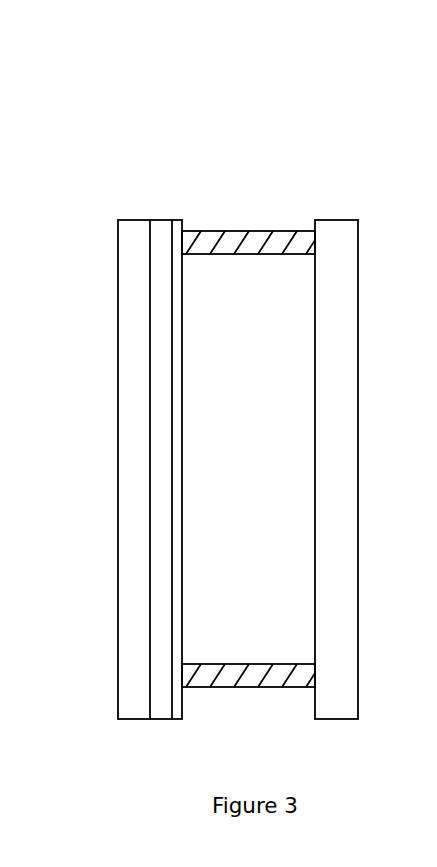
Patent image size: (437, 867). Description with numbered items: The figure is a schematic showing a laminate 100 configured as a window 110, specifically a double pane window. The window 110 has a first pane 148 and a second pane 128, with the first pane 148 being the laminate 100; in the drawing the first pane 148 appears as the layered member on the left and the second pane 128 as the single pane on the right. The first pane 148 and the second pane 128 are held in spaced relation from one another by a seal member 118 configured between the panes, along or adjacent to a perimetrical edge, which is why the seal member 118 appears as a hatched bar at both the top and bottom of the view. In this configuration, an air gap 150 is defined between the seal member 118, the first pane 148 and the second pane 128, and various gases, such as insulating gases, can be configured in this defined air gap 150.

The laminate 100 is at (130, 180).
The window 110 is at (322, 138).
The seal member 118 is at (243, 242).
The second pane 128 is at (358, 255).
The first pane 148 is at (83, 253).
The air gap 150 is at (262, 492).